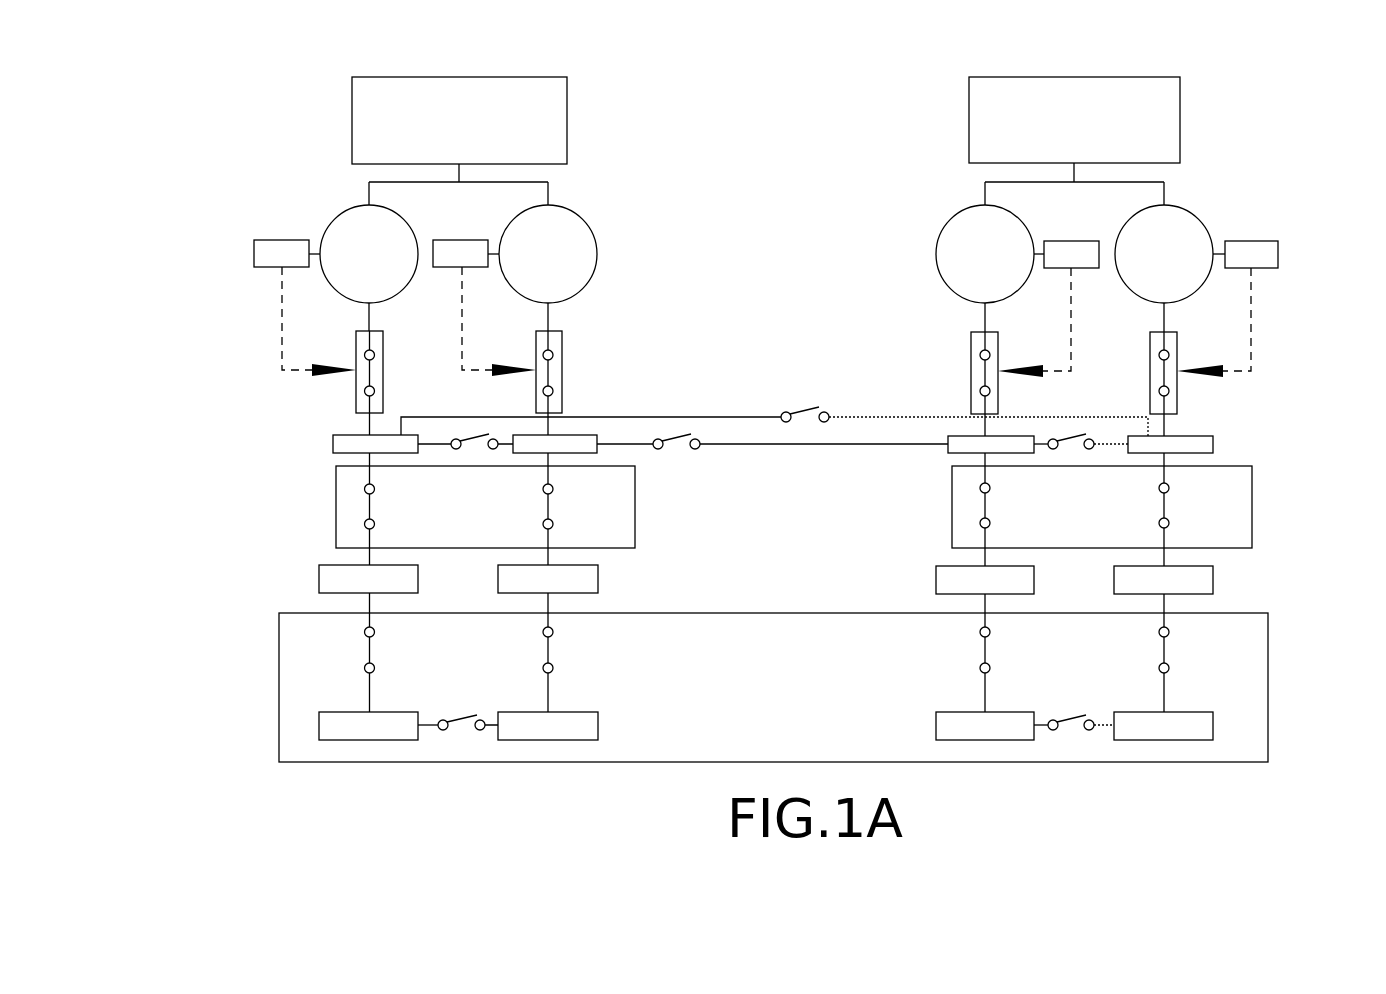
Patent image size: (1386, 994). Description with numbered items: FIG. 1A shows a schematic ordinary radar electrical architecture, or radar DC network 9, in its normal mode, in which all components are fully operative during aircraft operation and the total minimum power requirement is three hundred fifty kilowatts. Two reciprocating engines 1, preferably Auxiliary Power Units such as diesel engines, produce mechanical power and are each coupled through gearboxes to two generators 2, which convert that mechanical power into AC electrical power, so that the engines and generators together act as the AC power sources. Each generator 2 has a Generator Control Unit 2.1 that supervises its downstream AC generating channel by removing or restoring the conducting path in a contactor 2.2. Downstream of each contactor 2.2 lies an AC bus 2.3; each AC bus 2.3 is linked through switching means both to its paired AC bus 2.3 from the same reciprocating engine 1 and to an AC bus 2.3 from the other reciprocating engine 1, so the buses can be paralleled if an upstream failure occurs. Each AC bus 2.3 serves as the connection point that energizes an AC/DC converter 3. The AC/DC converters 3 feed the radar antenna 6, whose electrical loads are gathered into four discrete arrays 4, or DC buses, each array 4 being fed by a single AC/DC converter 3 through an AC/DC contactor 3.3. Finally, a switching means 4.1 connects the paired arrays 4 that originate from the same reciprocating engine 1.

The electrical power distribution system 9 is at (205, 78).
The reciprocating engine 1 is at (392, 77).
The generator 2 is at (333, 216).
The Generator Control Unit 2.1 is at (247, 250).
The contactor 2.2 is at (372, 386).
The AC bus 2.3 is at (347, 435).
The AC/DC converter 3 is at (337, 565).
The AC/DC contactor 3.3 is at (363, 638).
The array 4 is at (583, 710).
The switching means 4.1 is at (477, 718).
The radar antenna 6 is at (1268, 638).